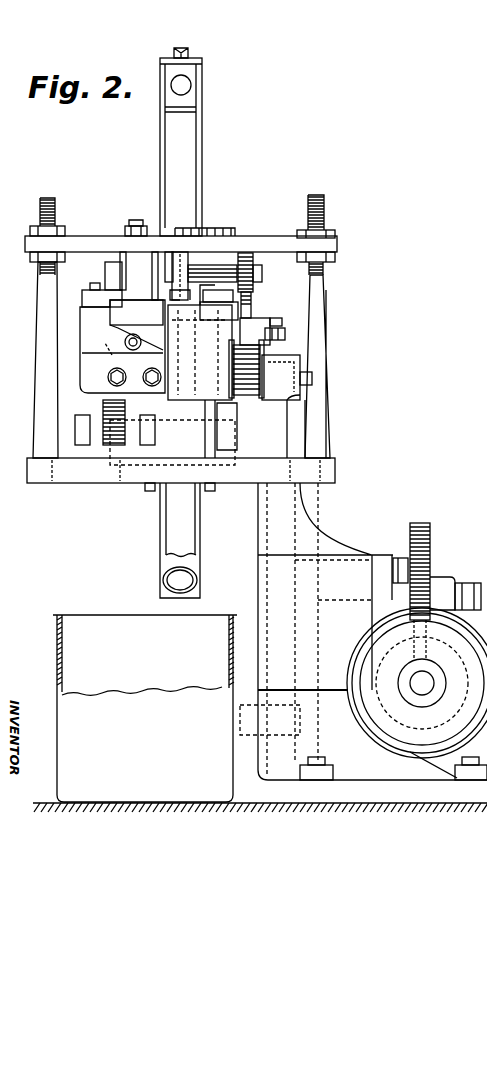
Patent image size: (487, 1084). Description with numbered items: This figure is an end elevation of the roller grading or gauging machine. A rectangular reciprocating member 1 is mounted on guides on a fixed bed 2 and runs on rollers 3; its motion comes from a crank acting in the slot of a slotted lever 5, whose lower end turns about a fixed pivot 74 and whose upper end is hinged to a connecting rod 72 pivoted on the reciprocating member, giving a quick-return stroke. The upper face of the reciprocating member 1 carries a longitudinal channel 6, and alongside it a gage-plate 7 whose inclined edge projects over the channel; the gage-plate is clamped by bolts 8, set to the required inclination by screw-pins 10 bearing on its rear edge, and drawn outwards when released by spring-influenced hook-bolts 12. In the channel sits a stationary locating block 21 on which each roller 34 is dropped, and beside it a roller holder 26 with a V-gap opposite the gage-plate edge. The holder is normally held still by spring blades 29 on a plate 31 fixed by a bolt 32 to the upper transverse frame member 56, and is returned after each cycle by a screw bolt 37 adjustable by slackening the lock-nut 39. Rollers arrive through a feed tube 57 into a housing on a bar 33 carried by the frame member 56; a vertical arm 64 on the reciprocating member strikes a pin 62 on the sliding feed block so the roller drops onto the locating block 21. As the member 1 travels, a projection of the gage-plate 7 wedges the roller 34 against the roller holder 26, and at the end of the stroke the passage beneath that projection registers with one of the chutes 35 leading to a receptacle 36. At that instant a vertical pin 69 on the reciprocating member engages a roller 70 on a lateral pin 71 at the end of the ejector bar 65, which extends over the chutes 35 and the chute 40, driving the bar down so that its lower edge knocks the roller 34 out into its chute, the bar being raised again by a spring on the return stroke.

The reciprocating member 1 is at (74, 346).
The bed 2 is at (62, 485).
The rollers 3 is at (262, 353).
The slotted lever 5 is at (283, 428).
The channel 6 is at (108, 361).
The gage-plate 7 is at (255, 306).
The bolts 8 is at (259, 297).
The screw-pins 10 is at (268, 319).
The hook-bolts 12 is at (270, 333).
The locating block 21 is at (226, 378).
The roller holder 26 is at (122, 346).
The spring blades 29 is at (125, 275).
The plate 31 is at (417, 650).
The bolt 32 is at (128, 220).
The bar 33 is at (220, 255).
The roller 34 is at (178, 340).
The chutes 35 is at (166, 561).
The receptacle 36 is at (108, 600).
The screw bolt 37 is at (125, 342).
The lock-nut 39 is at (120, 350).
The chute 40 is at (175, 515).
The upper transverse frame member 56 is at (330, 240).
The feed tube 57 is at (190, 147).
The pin 62 is at (157, 250).
The vertical arm 64 is at (120, 265).
The ejector bar 65 is at (183, 256).
The vertical pin 69 is at (264, 297).
The roller 70 is at (245, 258).
The lateral pin 71 is at (233, 258).
The connecting rod 72 is at (300, 370).
The fixed pivot 74 is at (236, 723).